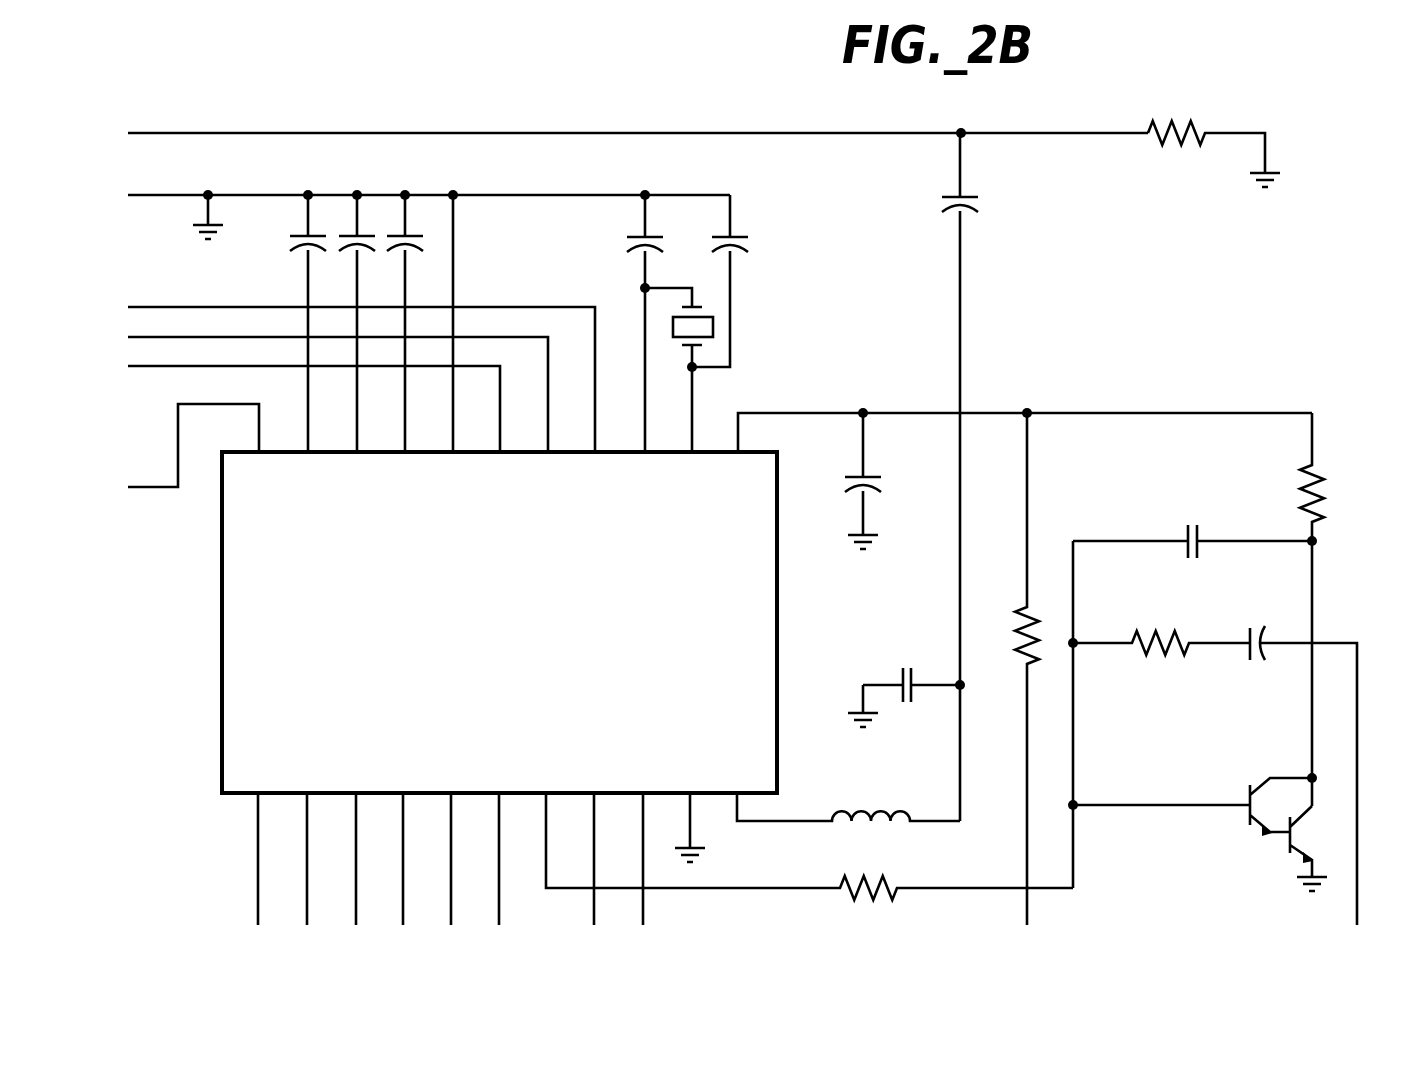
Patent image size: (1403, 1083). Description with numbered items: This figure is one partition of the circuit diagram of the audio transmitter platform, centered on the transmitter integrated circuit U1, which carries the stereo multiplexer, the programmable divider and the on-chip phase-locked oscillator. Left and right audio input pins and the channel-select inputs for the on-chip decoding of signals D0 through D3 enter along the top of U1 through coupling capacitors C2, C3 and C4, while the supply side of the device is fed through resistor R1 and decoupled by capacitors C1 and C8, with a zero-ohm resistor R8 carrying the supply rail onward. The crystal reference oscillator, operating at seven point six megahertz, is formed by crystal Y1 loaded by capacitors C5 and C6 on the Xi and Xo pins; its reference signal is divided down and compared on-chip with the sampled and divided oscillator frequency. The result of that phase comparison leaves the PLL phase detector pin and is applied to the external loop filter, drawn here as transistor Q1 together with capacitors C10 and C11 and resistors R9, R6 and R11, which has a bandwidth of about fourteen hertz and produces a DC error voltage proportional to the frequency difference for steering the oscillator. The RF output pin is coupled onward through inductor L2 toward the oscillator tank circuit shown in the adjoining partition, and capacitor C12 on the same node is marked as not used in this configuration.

The BH1417F stereo FM transmitter IC U1 is at (576, 619).
The resistor 270 ohm R1 is at (1214, 135).
The capacitor 1000pF C1 is at (914, 477).
The capacitor 2200pF C2 is at (263, 323).
The capacitor 150pF C3 is at (345, 292).
The capacitor 470pF C4 is at (430, 292).
The capacitor 27pF C5 is at (615, 323).
The capacitor 27pF C6 is at (758, 281).
The crystal 7.60MHz Y1 is at (750, 370).
The capacitor .1uF C8 is at (893, 481).
The capacitor (not used) C12 is at (904, 686).
The resistor 0 ohm R8 is at (1008, 669).
The resistor 5.1K R6 is at (1345, 609).
The loop filter capacitor C10 is at (1192, 512).
The loop filter resistor R9 is at (1161, 645).
The loop filter capacitor C11 is at (1294, 761).
The loop filter transistor Q1 is at (1200, 834).
The inductor 0 L2 is at (848, 806).
The resistor 20K R11 is at (809, 846).